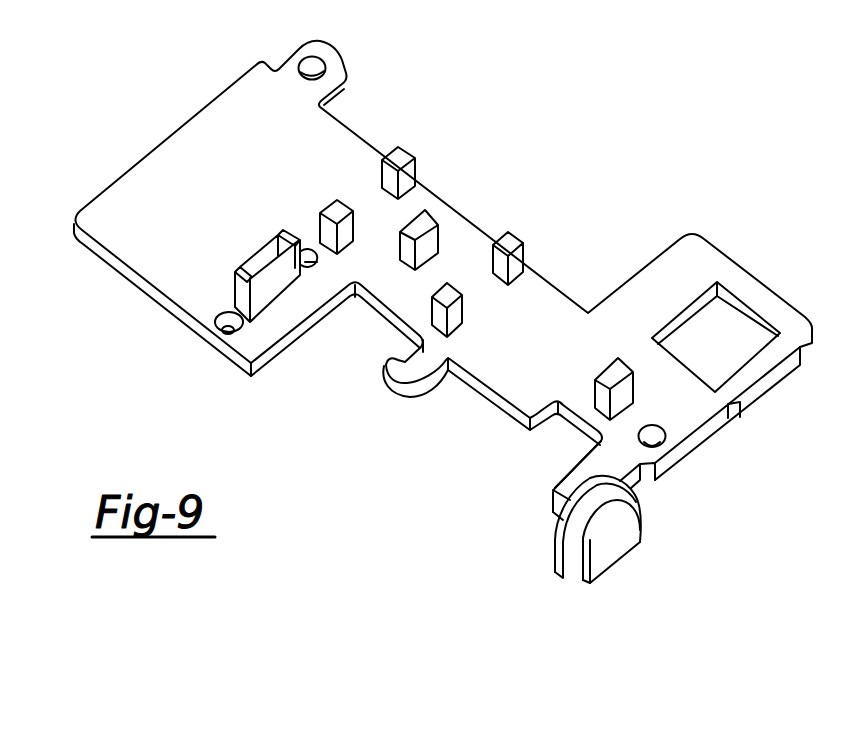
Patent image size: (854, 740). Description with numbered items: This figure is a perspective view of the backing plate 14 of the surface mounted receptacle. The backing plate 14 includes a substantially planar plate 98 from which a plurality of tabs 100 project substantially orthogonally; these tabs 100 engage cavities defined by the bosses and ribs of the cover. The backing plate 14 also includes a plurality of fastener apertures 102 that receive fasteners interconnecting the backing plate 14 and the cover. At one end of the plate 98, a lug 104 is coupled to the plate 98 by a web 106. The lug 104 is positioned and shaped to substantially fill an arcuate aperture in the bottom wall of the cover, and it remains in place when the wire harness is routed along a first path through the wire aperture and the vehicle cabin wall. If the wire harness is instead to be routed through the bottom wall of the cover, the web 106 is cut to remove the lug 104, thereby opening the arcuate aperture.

The backing plate 14 is at (420, 314).
The planar plate 98 is at (105, 267).
The tabs 100 is at (318, 222).
The fastener apertures 102 is at (299, 66).
The lug 104 is at (604, 556).
The web 106 is at (556, 494).